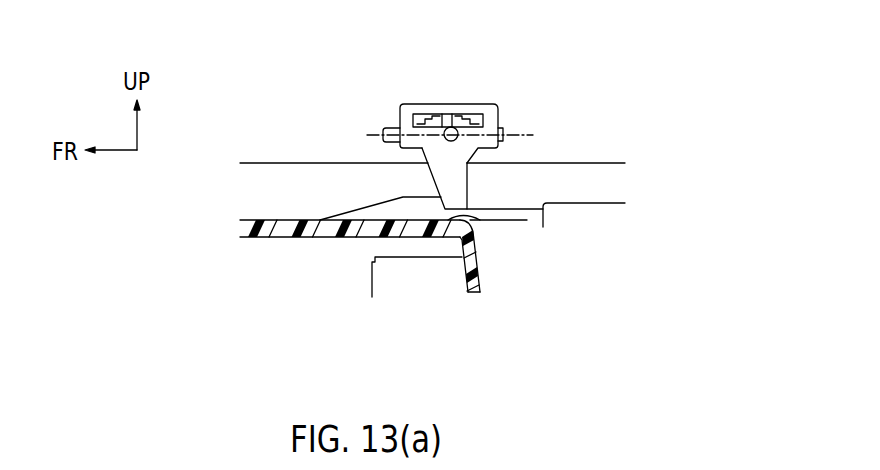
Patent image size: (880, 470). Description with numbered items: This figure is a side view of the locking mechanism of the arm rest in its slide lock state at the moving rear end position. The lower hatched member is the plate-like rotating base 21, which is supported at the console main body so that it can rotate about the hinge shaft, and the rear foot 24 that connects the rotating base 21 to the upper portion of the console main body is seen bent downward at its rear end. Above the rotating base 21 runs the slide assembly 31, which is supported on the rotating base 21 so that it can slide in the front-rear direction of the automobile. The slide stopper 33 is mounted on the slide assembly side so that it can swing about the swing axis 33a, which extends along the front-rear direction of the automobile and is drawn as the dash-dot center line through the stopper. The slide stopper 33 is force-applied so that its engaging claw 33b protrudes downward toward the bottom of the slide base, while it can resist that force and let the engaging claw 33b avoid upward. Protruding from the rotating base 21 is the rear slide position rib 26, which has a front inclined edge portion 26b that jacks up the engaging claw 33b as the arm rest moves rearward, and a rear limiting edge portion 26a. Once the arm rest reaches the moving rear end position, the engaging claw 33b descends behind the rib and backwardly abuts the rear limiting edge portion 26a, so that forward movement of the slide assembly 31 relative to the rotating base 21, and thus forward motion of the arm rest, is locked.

The rotating base 21 is at (268, 214).
The rear foot 24 is at (462, 268).
The rear slide position rib 26 is at (403, 210).
The rear limiting edge portion 26a is at (463, 217).
The front inclined edge portion 26b is at (357, 207).
The slide assembly 31 is at (258, 166).
The slide stopper 33 is at (453, 107).
The swing axis 33a is at (520, 130).
The engaging claw 33b is at (457, 188).